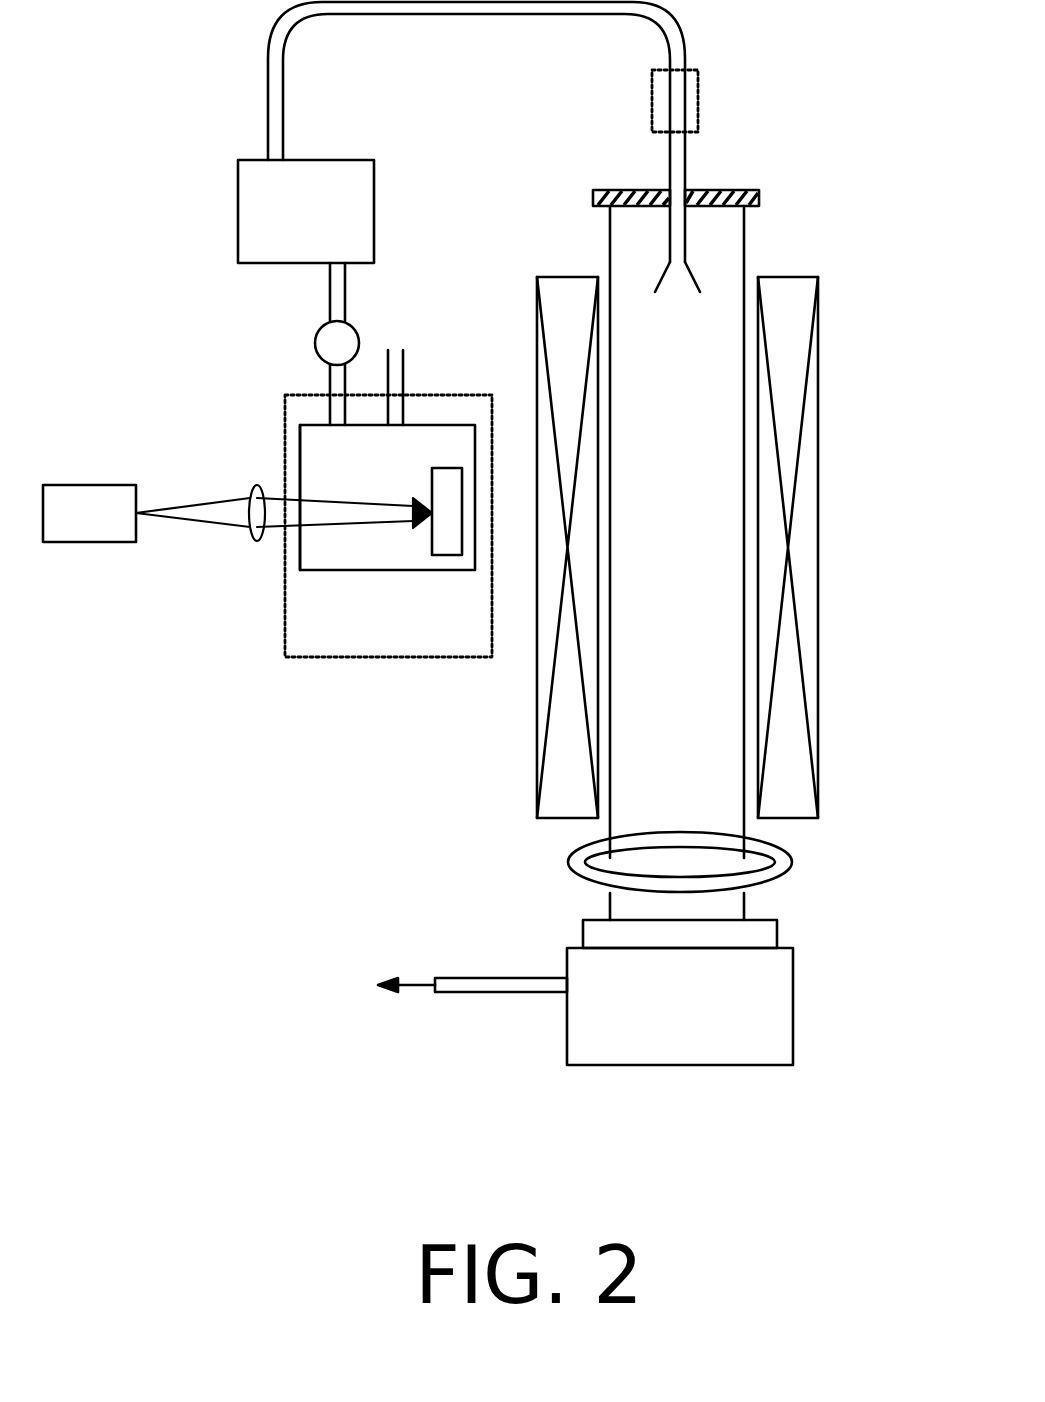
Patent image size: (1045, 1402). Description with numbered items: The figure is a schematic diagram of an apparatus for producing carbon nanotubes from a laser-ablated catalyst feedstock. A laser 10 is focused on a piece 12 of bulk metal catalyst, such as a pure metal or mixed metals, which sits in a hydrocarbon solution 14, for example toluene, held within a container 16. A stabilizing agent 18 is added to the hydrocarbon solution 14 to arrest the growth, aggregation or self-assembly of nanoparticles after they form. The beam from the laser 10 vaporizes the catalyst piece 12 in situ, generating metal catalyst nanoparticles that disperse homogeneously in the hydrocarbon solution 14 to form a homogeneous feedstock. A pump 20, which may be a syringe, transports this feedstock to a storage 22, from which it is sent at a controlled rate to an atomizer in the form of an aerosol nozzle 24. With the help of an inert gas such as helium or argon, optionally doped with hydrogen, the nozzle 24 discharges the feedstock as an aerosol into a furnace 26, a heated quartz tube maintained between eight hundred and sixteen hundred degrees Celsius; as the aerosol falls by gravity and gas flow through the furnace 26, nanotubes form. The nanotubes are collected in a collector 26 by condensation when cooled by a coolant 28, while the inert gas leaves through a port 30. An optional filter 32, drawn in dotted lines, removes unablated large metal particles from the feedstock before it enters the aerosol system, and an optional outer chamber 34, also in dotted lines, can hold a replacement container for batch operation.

The laser 10 is at (83, 545).
The piece of bulk metal catalyst 12 is at (450, 555).
The hydrocarbon solution 14 is at (330, 540).
The container 16 is at (300, 455).
The stabilizing agent 18 is at (403, 410).
The pump 20 is at (359, 338).
The storage 22 is at (353, 192).
The aerosol nozzle 24 is at (697, 278).
The furnace 26 is at (820, 335).
The coolant 28 is at (567, 862).
The port 30 is at (523, 993).
The filter 32 is at (693, 72).
The outer chamber 34 is at (300, 660).